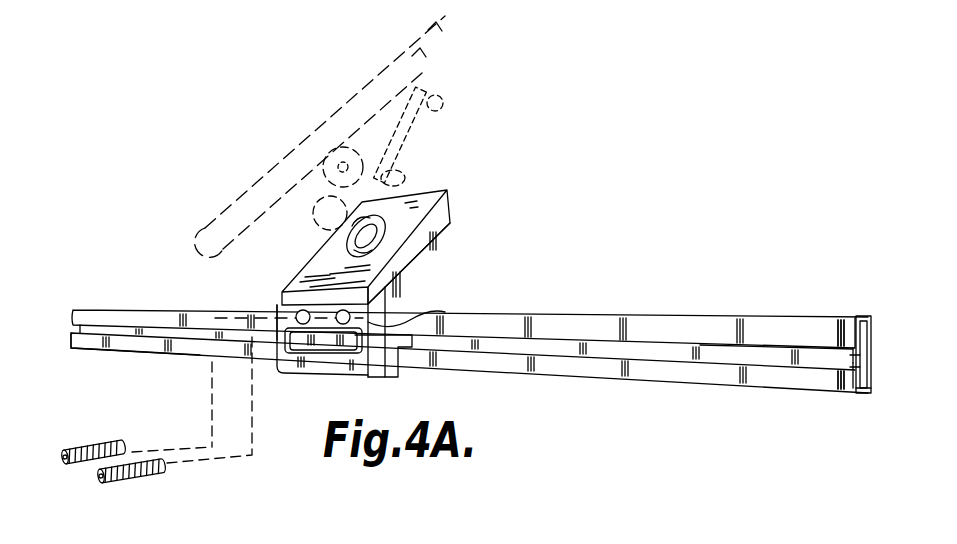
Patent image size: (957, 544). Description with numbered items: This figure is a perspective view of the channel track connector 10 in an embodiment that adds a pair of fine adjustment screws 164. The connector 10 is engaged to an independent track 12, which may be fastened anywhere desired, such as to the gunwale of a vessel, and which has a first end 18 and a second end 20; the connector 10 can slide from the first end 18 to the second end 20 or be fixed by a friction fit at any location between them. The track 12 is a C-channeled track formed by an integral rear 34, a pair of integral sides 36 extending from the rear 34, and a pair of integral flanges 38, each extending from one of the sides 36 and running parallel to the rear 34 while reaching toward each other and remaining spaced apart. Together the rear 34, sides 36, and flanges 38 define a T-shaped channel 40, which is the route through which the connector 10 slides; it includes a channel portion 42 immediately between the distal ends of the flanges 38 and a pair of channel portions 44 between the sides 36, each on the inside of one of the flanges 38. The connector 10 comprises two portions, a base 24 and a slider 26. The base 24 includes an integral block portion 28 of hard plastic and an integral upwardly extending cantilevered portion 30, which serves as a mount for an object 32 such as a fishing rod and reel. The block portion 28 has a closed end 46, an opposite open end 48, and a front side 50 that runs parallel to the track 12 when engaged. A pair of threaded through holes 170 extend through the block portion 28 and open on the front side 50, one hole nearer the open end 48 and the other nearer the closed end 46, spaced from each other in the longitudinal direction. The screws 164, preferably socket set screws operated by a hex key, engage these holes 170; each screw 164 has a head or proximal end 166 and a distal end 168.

The channel track connector 10 is at (449, 271).
The track 12 is at (157, 353).
The first end 18 is at (72, 337).
The second end 20 is at (872, 370).
The base 24 is at (455, 216).
The slider 26 is at (385, 350).
The block portion 28 is at (283, 373).
The cantilevered portion 30 is at (303, 261).
The object 32 is at (294, 132).
The rear 34 is at (873, 350).
The sides 36 is at (866, 318).
The flanges 38 is at (600, 327).
The T-shaped channel 40 is at (853, 355).
The channel portion 42 is at (733, 352).
The channel portions 44 is at (868, 320).
The closed end 46 is at (275, 305).
The open end 48 is at (385, 318).
The front side 50 is at (337, 368).
The fine adjustment screws 164 is at (75, 447).
The proximal end 166 is at (97, 483).
The distal end 168 is at (167, 472).
The threaded through holes 170 is at (426, 314).